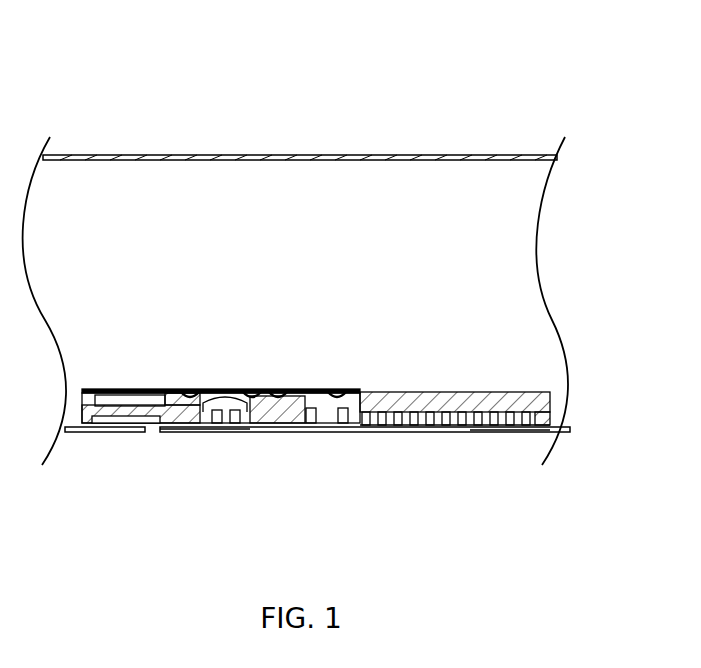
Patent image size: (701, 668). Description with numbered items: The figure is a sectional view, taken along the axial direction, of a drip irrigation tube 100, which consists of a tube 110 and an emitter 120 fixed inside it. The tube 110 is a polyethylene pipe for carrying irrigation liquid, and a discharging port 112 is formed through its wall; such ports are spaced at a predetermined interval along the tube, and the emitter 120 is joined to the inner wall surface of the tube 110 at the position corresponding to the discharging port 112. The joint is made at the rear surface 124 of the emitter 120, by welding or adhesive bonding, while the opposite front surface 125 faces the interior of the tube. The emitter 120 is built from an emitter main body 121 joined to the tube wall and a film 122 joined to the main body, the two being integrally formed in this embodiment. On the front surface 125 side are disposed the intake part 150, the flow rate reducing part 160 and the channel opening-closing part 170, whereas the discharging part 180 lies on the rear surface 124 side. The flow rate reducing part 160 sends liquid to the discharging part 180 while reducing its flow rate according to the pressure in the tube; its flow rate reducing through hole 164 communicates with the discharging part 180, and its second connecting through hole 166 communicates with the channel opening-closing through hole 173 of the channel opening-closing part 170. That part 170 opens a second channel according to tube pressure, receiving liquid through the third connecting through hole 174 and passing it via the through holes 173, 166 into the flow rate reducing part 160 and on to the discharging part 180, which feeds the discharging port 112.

The drip irrigation tube 100 is at (592, 81).
The tube 110 is at (265, 155).
The discharging port 112 is at (147, 432).
The emitter 120 is at (80, 316).
The emitter main body 121 is at (97, 390).
The film 122 is at (160, 390).
The rear surface 124 is at (510, 433).
The front surface 125 is at (510, 392).
The intake part 150 is at (405, 392).
The flow rate reducing part 160 is at (222, 398).
The flow rate reducing through hole 164 is at (220, 425).
The second connecting through hole 166 is at (252, 425).
The channel opening-closing part 170 is at (316, 390).
The channel opening-closing through hole 173 is at (312, 428).
The third connecting through hole 174 is at (345, 425).
The discharging part 180 is at (197, 433).